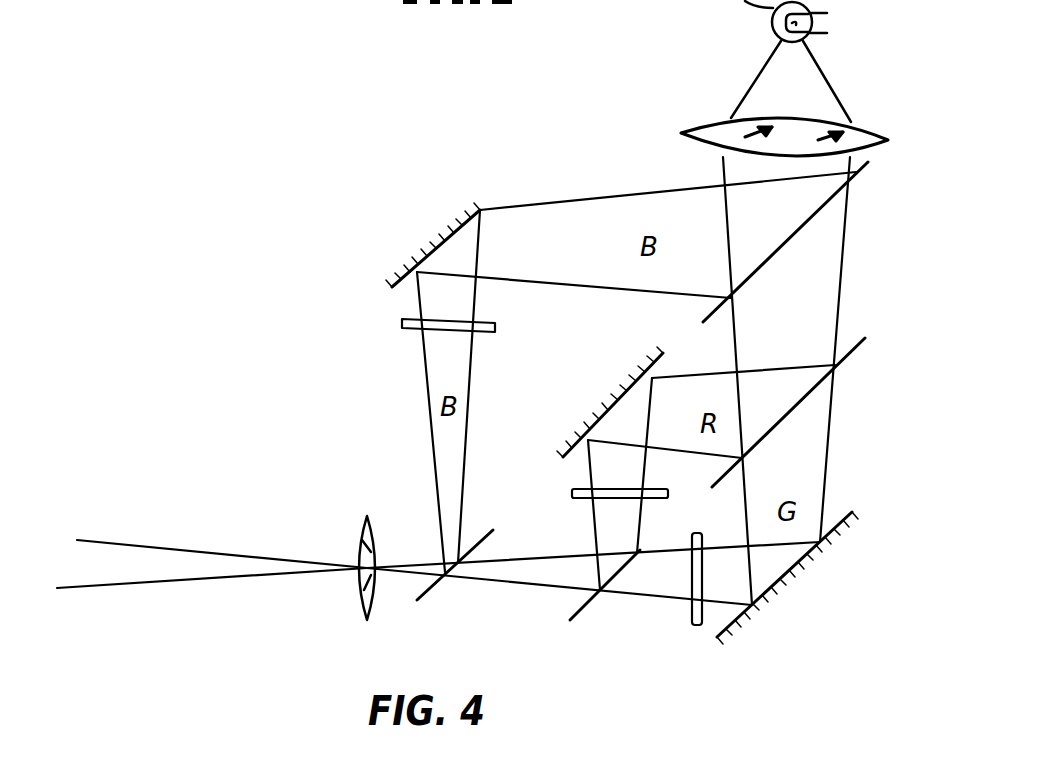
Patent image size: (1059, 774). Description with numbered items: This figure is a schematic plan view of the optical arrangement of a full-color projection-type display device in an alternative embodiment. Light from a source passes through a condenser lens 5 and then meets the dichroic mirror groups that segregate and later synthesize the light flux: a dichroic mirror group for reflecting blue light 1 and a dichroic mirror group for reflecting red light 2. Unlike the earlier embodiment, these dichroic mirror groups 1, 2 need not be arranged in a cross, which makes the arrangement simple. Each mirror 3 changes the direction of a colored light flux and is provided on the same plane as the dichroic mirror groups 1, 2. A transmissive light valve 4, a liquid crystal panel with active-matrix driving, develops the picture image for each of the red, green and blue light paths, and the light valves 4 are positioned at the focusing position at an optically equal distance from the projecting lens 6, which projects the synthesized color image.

The dichroic mirror group for reflecting blue light 1 is at (859, 174).
The dichroic mirror group for reflecting red light 2 is at (847, 355).
The mirror 3 is at (482, 207).
The light valve 4 is at (401, 327).
The condenser lens 5 is at (889, 140).
The projecting lens 6 is at (362, 612).